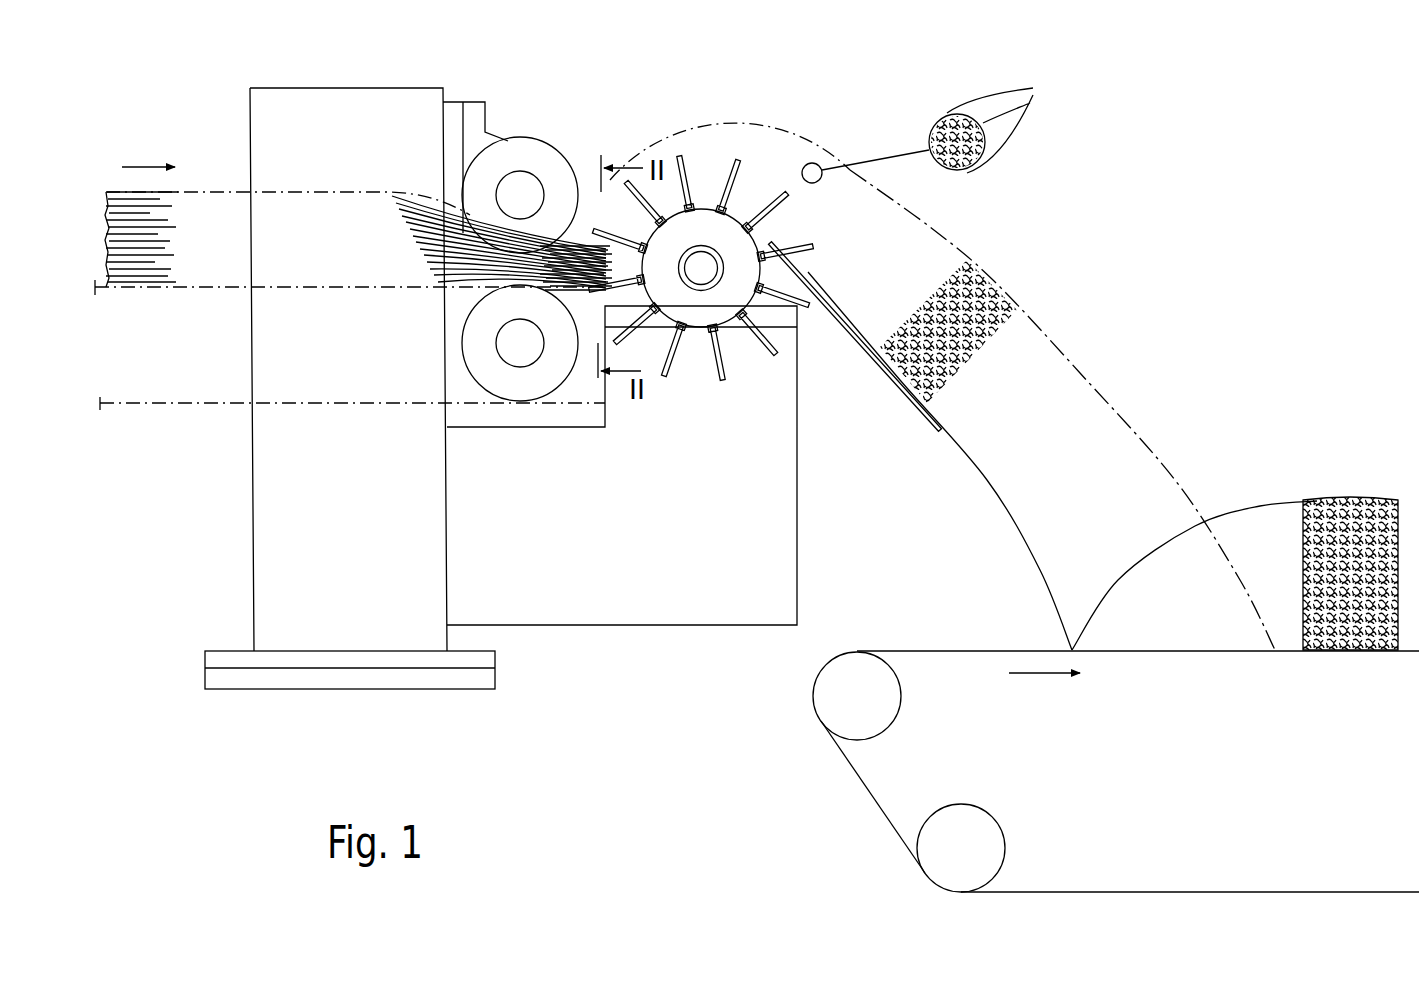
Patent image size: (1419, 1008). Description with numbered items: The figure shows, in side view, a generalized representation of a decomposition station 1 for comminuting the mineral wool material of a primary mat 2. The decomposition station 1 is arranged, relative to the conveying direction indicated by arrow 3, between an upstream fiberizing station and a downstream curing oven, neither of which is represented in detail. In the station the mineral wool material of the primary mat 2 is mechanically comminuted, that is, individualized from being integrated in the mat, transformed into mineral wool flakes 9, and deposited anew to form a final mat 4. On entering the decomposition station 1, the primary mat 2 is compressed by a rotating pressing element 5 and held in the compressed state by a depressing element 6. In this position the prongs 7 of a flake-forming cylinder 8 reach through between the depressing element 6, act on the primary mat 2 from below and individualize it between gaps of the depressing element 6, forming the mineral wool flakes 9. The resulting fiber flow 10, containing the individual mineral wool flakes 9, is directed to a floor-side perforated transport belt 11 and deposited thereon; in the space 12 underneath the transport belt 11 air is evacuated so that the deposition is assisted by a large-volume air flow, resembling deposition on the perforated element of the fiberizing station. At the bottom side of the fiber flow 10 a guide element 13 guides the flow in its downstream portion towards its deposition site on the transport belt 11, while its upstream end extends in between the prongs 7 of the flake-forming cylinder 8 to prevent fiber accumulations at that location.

The decomposition station 1 is at (630, 130).
The primary mat 2 is at (225, 188).
The arrow (conveying direction) 3 is at (138, 167).
The final mat 4 is at (1340, 498).
The rotating pressing element 5 is at (527, 153).
The depressing element 6 is at (577, 247).
The prongs 7 is at (743, 164).
The flake-forming cylinder 8 is at (700, 312).
The mineral wool flakes 9 is at (924, 131).
The fiber flow 10 is at (1000, 270).
The transport belt 11 is at (928, 648).
The space 12 is at (1116, 722).
The guide element 13 is at (897, 383).